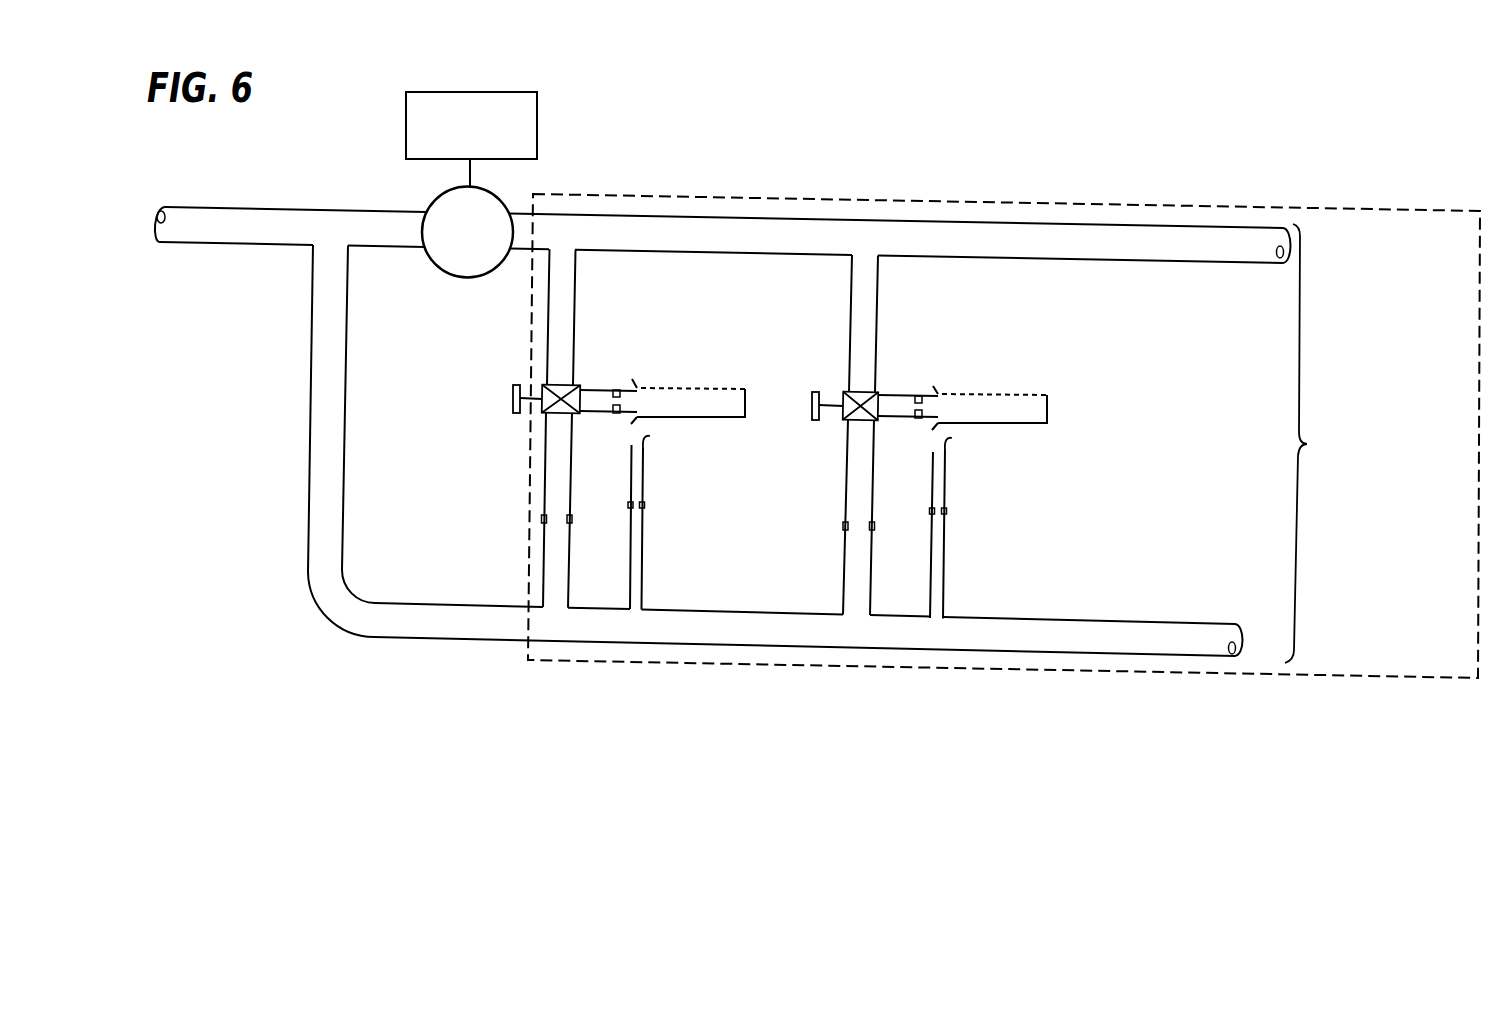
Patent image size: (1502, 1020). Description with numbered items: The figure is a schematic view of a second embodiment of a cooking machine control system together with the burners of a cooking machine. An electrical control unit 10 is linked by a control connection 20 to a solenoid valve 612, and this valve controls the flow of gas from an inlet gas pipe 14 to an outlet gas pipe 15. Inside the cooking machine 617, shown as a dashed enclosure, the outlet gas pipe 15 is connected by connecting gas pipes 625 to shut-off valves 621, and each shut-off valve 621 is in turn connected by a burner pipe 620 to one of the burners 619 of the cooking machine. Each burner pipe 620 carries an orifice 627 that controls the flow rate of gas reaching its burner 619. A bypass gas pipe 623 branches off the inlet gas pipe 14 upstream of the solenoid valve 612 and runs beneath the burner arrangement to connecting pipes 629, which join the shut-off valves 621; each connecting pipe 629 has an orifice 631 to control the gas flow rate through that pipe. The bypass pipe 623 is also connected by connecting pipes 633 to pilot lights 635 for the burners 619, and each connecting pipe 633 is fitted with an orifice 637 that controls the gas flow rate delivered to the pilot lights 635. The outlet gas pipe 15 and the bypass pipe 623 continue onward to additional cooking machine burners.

The electrical control unit 10 is at (538, 104).
The inlet gas pipe 14 is at (257, 217).
The outlet gas pipe 15 is at (527, 223).
The control line 20 is at (468, 172).
The solenoid valve 612 is at (465, 278).
The cooking machine 617 is at (1050, 203).
The burner 619 is at (691, 387).
The burner pipe 620 is at (598, 389).
The shut-off valve 621 is at (542, 385).
The bypass gas pipe 623 is at (593, 622).
The connecting gas pipe 625 is at (567, 314).
The orifice 627 is at (618, 381).
The connecting pipe 629 is at (545, 463).
The orifice 631 is at (545, 518).
The connecting pipe 633 is at (640, 558).
The pilot light 635 is at (650, 436).
The orifice 637 is at (645, 506).